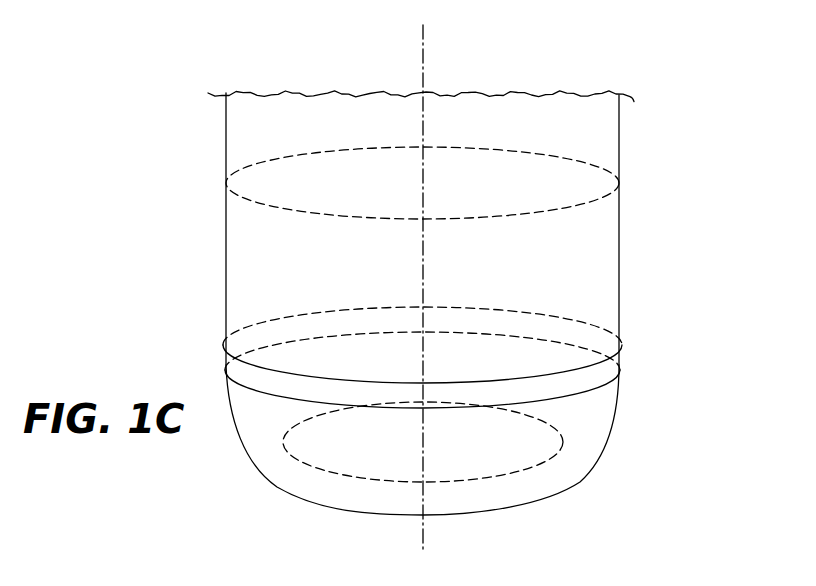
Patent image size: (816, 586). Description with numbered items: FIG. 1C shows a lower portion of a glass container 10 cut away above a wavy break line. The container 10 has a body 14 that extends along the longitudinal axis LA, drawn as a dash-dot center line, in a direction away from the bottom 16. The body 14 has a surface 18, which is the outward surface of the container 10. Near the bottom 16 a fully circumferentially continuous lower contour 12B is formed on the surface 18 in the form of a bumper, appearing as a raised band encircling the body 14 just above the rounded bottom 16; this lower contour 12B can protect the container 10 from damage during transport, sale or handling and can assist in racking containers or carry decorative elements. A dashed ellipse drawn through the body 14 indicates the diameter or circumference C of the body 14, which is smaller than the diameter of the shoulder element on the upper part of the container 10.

The container 10 is at (168, 220).
The lower contour 12B is at (618, 366).
The body 14 is at (602, 247).
The bottom 16 is at (557, 492).
The surface 18 is at (227, 290).
The diameter or circumference C is at (597, 165).
The longitudinal axis LA is at (423, 76).